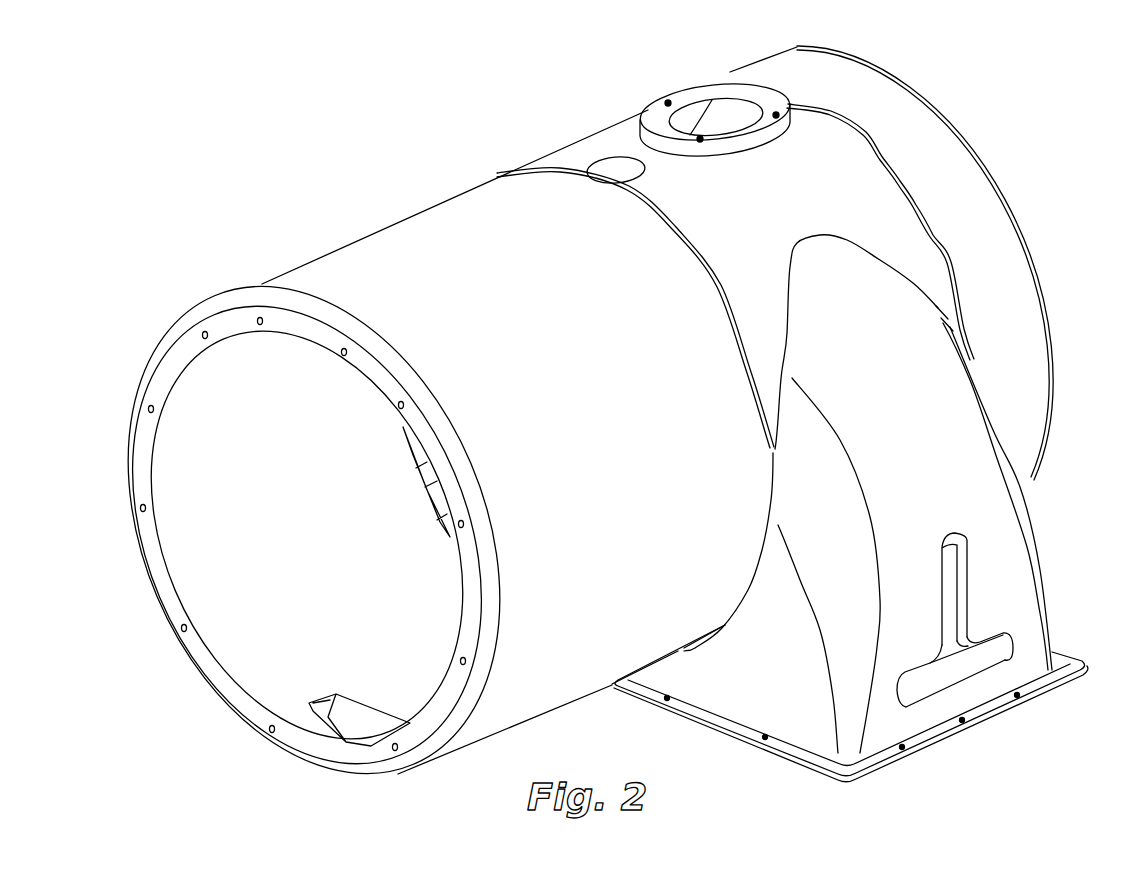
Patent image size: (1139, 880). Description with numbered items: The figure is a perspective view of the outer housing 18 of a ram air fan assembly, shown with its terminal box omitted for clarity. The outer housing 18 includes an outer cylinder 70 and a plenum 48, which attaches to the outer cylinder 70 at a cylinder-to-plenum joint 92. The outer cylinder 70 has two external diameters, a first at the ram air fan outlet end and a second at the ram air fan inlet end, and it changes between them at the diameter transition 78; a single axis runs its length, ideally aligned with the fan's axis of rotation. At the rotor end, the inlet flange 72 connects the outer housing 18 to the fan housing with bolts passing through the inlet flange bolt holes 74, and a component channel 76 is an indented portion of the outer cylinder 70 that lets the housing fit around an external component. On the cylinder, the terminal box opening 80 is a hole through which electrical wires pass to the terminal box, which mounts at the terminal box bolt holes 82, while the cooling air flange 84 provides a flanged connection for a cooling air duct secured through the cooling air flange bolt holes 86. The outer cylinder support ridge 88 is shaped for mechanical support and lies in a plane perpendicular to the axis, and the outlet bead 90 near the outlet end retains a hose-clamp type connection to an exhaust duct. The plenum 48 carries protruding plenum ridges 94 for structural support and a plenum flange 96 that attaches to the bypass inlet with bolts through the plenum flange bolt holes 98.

The outer housing 18 is at (162, 111).
The plenum 48 is at (1055, 529).
The outer cylinder 70 is at (539, 150).
The inlet flange 72 is at (172, 614).
The inlet flange bolt holes 74 is at (143, 506).
The component channel 76 is at (366, 710).
The diameter transition 78 is at (680, 245).
The terminal box opening 80 is at (616, 157).
The terminal box bolt holes 82 is at (555, 220).
The cooling air flange 84 is at (710, 92).
The cooling air flange bolt holes 86 is at (777, 115).
The outer cylinder support ridge 88 is at (883, 173).
The outlet bead 90 is at (993, 180).
The cylinder-to-plenum joint 92 is at (785, 320).
The plenum ridges 94 is at (1005, 658).
The plenum flange 96 is at (883, 755).
The plenum flange bolt holes 98 is at (1018, 697).